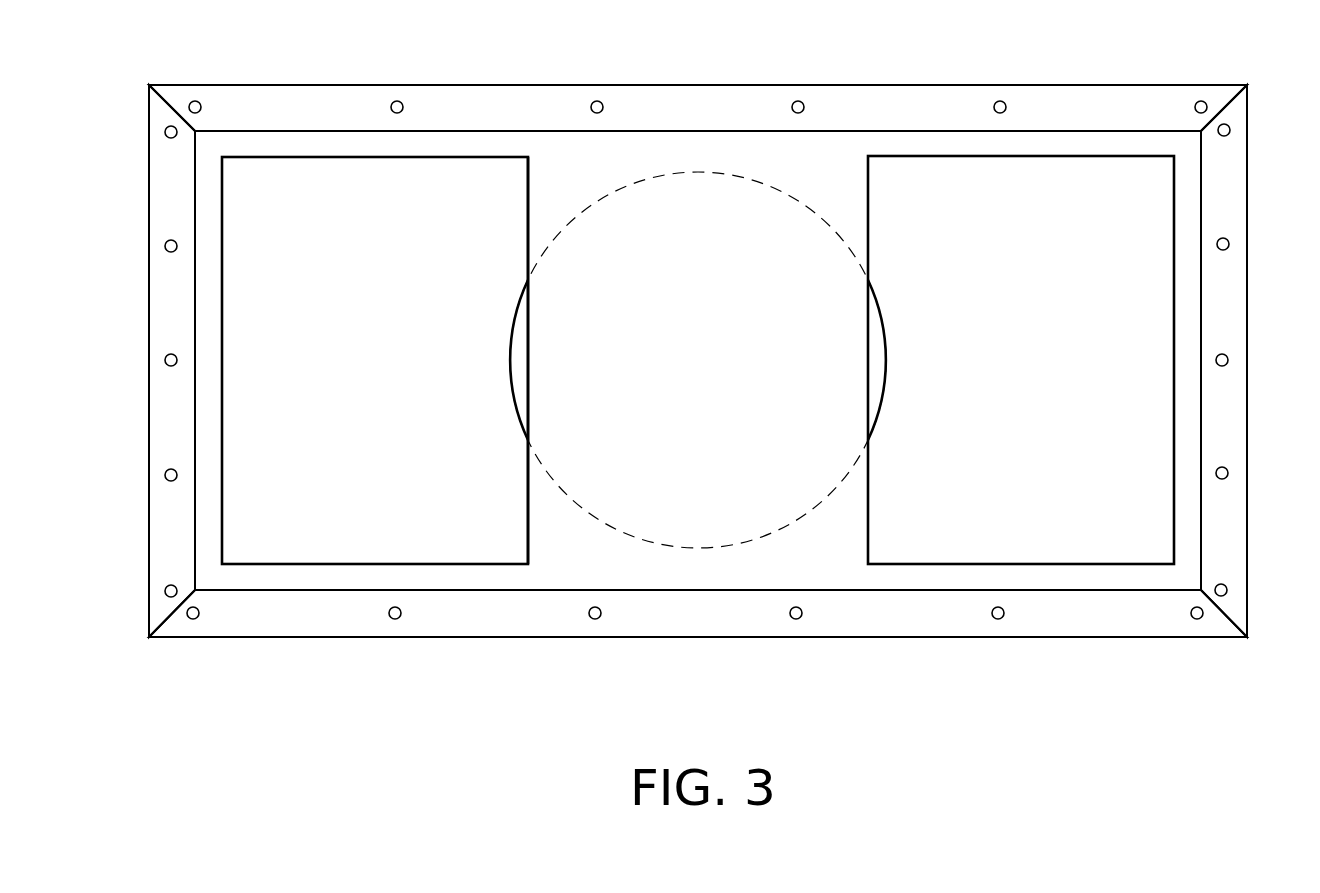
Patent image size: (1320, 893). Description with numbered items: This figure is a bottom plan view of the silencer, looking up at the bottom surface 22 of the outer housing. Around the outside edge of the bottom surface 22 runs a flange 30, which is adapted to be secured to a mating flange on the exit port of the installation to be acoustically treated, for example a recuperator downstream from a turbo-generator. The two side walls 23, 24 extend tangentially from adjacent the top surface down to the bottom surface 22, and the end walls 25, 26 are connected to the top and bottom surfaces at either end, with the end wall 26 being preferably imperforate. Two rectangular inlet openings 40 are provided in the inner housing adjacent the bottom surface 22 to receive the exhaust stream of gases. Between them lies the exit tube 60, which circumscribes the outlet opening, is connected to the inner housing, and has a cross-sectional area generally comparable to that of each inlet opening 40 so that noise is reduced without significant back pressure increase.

The bottom surface 22 is at (540, 537).
The side wall 23 is at (901, 590).
The side wall 24 is at (835, 130).
The end wall 25 is at (195, 413).
The end wall 26 is at (1200, 415).
The flange 30 is at (700, 95).
The inlet opening 40 is at (505, 188).
The exit tube 60 is at (507, 360).